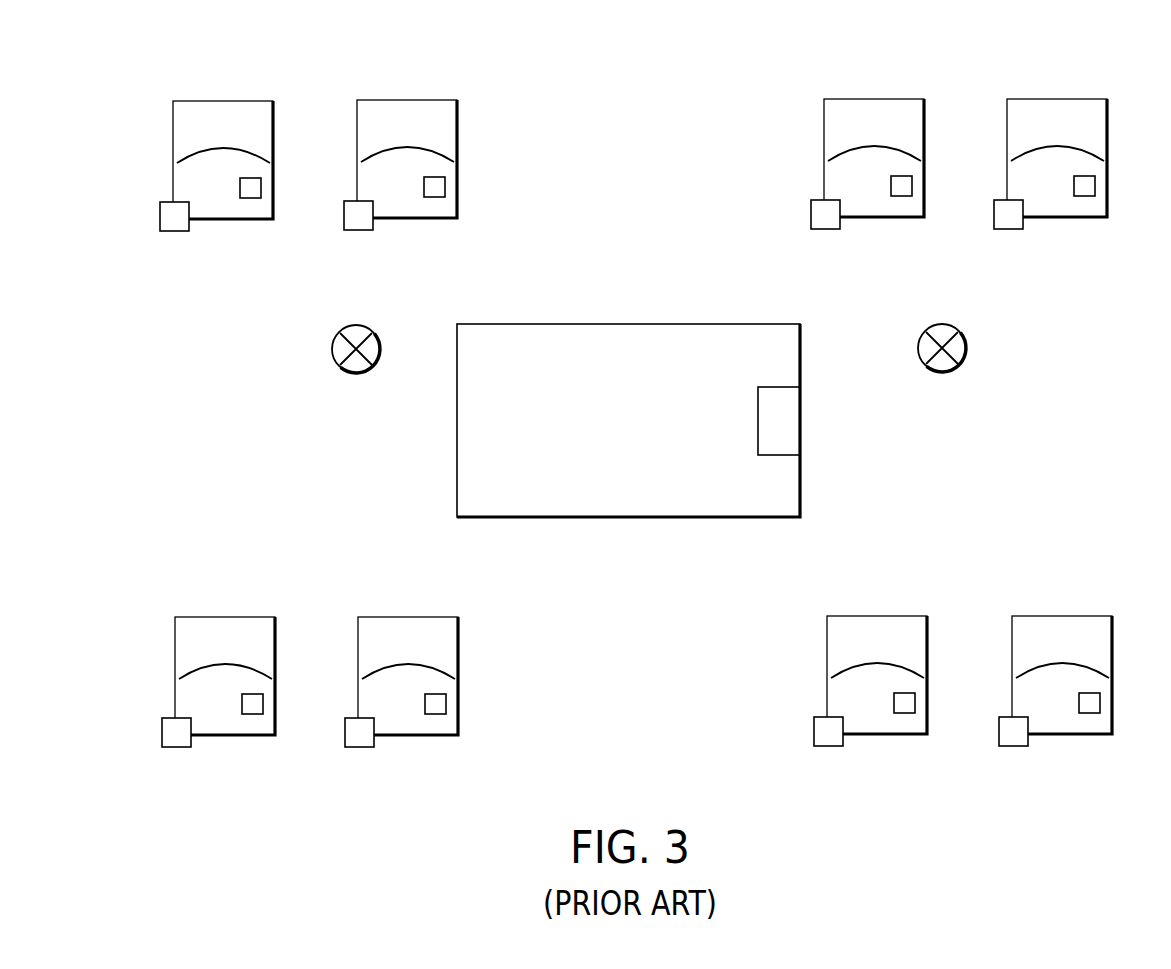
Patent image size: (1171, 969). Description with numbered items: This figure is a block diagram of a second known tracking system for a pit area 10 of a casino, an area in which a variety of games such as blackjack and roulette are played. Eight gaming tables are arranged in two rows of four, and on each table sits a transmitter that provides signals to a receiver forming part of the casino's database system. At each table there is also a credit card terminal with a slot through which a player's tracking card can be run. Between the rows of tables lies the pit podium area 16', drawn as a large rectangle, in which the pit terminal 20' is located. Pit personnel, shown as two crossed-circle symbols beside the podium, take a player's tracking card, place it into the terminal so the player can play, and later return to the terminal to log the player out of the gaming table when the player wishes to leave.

The pit area 10 is at (404, 847).
The pit podium area 16' is at (660, 393).
The pit terminal 20' is at (810, 421).